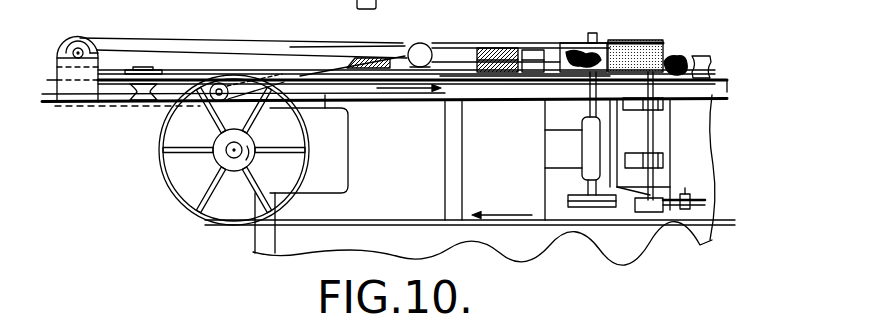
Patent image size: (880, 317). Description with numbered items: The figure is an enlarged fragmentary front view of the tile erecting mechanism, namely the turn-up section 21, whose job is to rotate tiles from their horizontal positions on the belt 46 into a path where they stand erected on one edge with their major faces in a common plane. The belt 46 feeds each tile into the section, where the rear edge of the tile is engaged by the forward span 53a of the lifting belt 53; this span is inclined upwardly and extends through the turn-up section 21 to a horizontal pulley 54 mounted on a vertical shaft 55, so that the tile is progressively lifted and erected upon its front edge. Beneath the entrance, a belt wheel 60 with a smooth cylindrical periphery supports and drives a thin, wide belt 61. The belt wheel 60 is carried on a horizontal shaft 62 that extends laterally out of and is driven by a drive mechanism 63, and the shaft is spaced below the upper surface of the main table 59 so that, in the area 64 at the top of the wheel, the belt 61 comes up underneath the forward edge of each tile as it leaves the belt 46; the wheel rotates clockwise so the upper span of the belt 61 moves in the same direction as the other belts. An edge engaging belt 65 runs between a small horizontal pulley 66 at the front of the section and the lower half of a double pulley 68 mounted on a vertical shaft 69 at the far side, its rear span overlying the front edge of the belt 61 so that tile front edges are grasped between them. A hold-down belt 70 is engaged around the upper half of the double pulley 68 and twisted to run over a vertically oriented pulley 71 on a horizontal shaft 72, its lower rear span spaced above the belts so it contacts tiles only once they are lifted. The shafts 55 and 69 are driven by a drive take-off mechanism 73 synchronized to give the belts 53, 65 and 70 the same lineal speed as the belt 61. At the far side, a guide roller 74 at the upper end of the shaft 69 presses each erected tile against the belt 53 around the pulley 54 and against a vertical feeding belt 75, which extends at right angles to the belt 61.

The turn-up section 21 is at (492, 23).
The belt 46 is at (49, 78).
The lifting belt 53 is at (477, 46).
The forward span of the lifting belt 53a is at (524, 50).
The horizontal pulley 54 is at (560, 45).
The vertical shaft 55 is at (590, 108).
The main table 59 is at (423, 99).
The belt wheel 60 is at (293, 201).
The belt 61 is at (727, 84).
The horizontal shaft 62 is at (224, 153).
The drive mechanism 63 is at (348, 152).
The area 64 is at (240, 64).
The edge engaging belt 65 is at (467, 82).
The small horizontal pulley 66 is at (157, 72).
The double pulley 68 is at (680, 56).
The vertical shaft 69 is at (653, 131).
The hold-down belt 70 is at (328, 46).
The vertically oriented pulley 71 is at (80, 36).
The horizontal shaft 72 is at (88, 53).
The drive take-off mechanism 73 is at (688, 182).
The guide roller 74 is at (663, 45).
The vertical feeding belt 75 is at (712, 60).